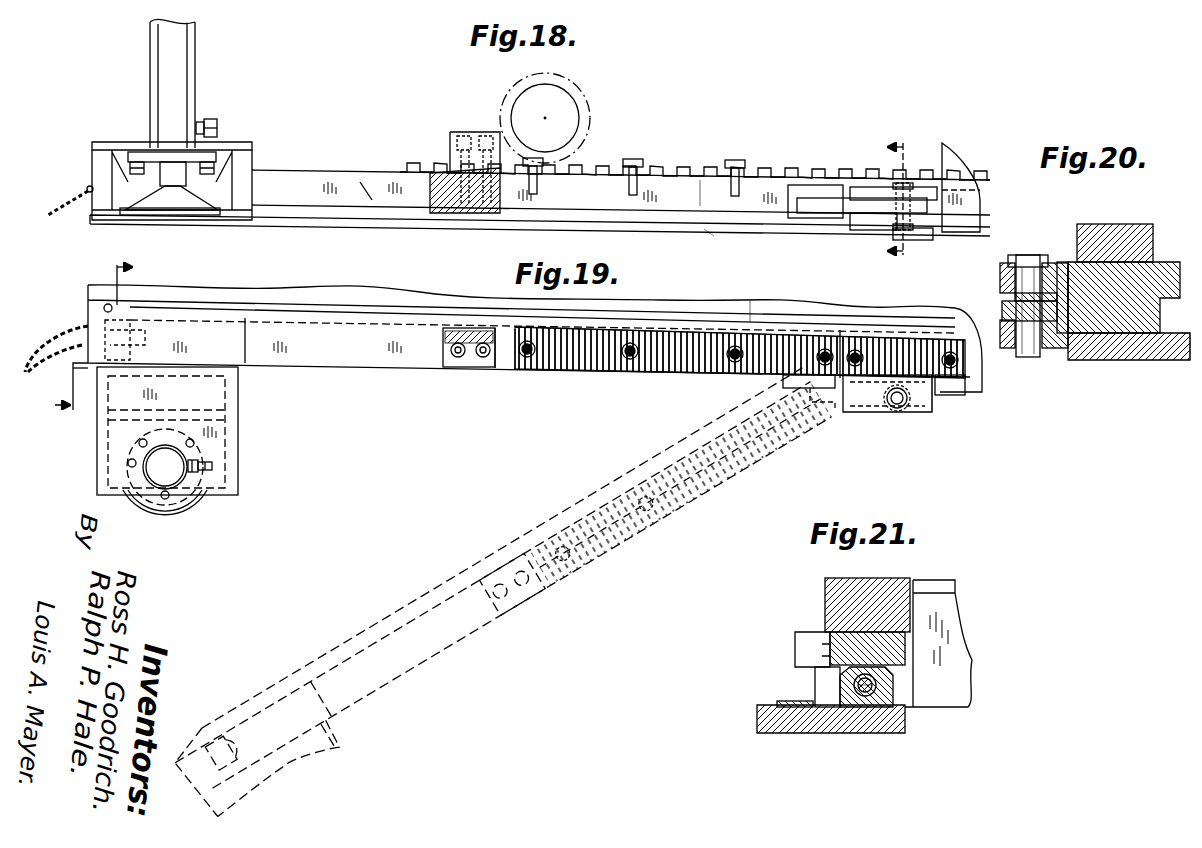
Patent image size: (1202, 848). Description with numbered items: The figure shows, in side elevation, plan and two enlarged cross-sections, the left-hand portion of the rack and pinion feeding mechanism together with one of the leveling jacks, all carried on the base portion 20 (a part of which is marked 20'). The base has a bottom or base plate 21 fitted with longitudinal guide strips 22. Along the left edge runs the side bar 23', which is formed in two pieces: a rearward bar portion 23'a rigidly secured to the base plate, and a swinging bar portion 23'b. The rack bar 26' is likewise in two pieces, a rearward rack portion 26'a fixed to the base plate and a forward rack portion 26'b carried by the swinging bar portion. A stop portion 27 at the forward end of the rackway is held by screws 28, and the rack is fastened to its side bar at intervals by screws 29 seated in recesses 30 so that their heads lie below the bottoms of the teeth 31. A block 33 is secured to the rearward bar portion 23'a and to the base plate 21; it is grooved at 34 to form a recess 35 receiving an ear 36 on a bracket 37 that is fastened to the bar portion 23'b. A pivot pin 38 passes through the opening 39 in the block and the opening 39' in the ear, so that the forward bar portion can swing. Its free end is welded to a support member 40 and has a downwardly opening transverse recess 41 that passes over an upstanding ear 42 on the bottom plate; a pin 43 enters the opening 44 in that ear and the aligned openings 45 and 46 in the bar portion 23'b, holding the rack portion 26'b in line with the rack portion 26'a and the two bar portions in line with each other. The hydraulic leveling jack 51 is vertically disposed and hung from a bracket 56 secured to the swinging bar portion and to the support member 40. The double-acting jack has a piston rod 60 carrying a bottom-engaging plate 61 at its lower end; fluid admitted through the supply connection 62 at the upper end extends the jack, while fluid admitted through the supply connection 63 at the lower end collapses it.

In FIG. 18, the base portion 20 is at (909, 196).
In FIG. 20, the base portion 20 is at (1175, 368).
In FIG. 18, the base rail 20' is at (693, 242).
In FIG. 18, the base plate 21 is at (766, 229).
In FIG. 19, the base plate 21 is at (94, 337).
In FIG. 20, the base plate 21 is at (1140, 360).
In FIG. 21, the base plate 21 is at (842, 732).
In FIG. 21, the guide strips 22 is at (779, 702).
In FIG. 18, the side bar 23' is at (621, 179).
In FIG. 19, the side bar 23' is at (535, 347).
In FIG. 18, the rearward bar portion 23'a is at (979, 187).
In FIG. 19, the rearward bar portion 23'a is at (900, 412).
In FIG. 20, the rearward bar portion 23'a is at (1124, 332).
In FIG. 18, the swinging bar portion 23'b is at (379, 172).
In FIG. 19, the swinging bar portion 23'b is at (509, 595).
In FIG. 21, the swinging bar portion 23'b is at (899, 643).
In FIG. 18, the rack bar 26' is at (723, 166).
In FIG. 19, the rack bar 26' is at (740, 373).
In FIG. 19, the rearward rack portion 26'a is at (968, 395).
In FIG. 19, the forward rack portion 26'b is at (779, 307).
In FIG. 18, the stop portion 27 is at (506, 166).
In FIG. 19, the stop portion 27 is at (486, 358).
In FIG. 18, the screws 28 is at (458, 176).
In FIG. 19, the screws 28 is at (458, 358).
In FIG. 18, the screws 29 is at (770, 172).
In FIG. 19, the screws 29 is at (720, 366).
In FIG. 18, the recesses 30 is at (636, 170).
In FIG. 19, the recesses 30 is at (630, 356).
In FIG. 20, the recesses 30 is at (1108, 226).
In FIG. 18, the teeth 31 is at (660, 162).
In FIG. 19, the teeth 31 is at (655, 328).
In FIG. 18, the block 33 is at (858, 194).
In FIG. 19, the block 33 is at (912, 410).
In FIG. 20, the block 33 is at (1062, 334).
In FIG. 18, the groove 34 is at (864, 220).
In FIG. 20, the groove 34 is at (1012, 297).
In FIG. 18, the recess 35 is at (925, 208).
In FIG. 20, the recess 35 is at (1056, 350).
In FIG. 18, the ear 36 is at (830, 206).
In FIG. 20, the ear 36 is at (1012, 310).
In FIG. 18, the bracket 37 is at (802, 188).
In FIG. 19, the bracket 37 is at (832, 388).
In FIG. 18, the pivot pin 38 is at (915, 190).
In FIG. 19, the pivot pin 38 is at (892, 410).
In FIG. 20, the pivot pin 38 is at (1030, 256).
In FIG. 20, the opening 39 is at (990, 269).
In FIG. 20, the opening 39' is at (990, 328).
In FIG. 18, the support member 40 is at (250, 150).
In FIG. 21, the support member 40 is at (848, 580).
In FIG. 21, the transverse recess 41 is at (828, 690).
In FIG. 21, the upstanding ear 42 is at (893, 684).
In FIG. 18, the pin 43 is at (88, 186).
In FIG. 19, the pin 43 is at (80, 330).
In FIG. 21, the pin 43 is at (876, 690).
In FIG. 19, the opening 44 is at (168, 318).
In FIG. 21, the opening 44 is at (865, 690).
In FIG. 19, the opening 45 is at (72, 375).
In FIG. 19, the opening 46 is at (140, 360).
In FIG. 18, the hydraulic leveling jack 51 is at (196, 72).
In FIG. 19, the hydraulic leveling jack 51 is at (160, 490).
In FIG. 18, the bracket 56 is at (236, 182).
In FIG. 19, the bracket 56 is at (232, 438).
In FIG. 18, the piston rod 60 is at (150, 210).
In FIG. 18, the bottom-engaging plate 61 is at (178, 205).
In FIG. 19, the bottom-engaging plate 61 is at (186, 504).
In FIG. 19, the supply connection 62 is at (214, 466).
In FIG. 18, the supply connection 63 is at (218, 128).